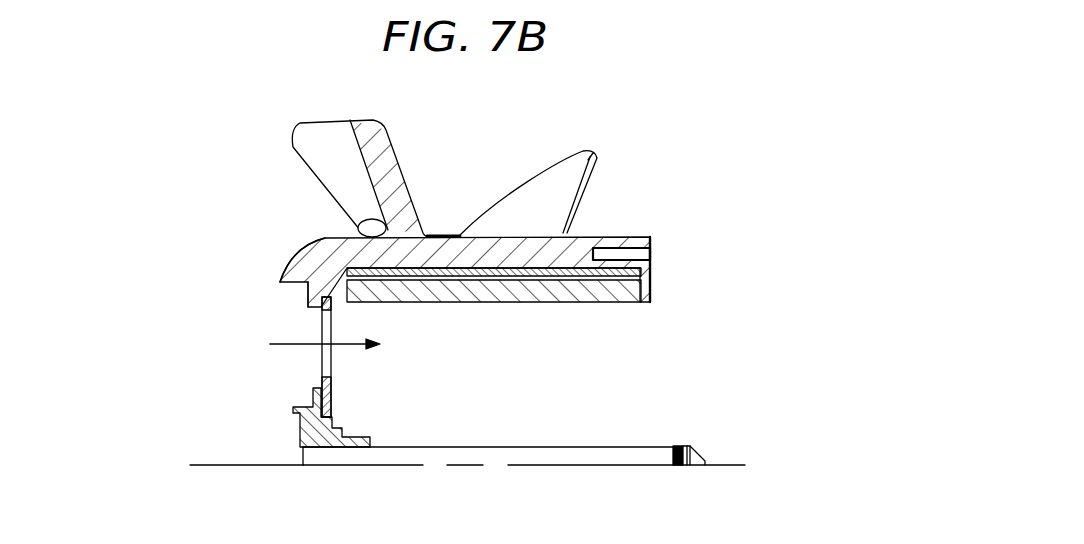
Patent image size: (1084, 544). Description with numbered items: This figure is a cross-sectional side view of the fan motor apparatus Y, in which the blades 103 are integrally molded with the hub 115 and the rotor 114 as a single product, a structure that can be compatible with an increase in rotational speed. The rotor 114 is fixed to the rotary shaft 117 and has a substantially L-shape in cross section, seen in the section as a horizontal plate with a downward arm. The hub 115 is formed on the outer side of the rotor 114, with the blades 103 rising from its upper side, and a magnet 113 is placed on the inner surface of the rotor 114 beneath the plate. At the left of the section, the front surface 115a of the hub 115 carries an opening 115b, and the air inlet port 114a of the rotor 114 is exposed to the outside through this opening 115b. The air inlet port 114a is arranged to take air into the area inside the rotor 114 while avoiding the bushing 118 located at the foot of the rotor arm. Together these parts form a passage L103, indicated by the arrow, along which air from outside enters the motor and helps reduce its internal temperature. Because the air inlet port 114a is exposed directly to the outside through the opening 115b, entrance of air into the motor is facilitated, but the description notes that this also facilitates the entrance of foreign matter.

The blades 103 is at (557, 164).
The hub 115 is at (635, 237).
The front surface of the hub 115a is at (278, 281).
The opening 115b is at (282, 322).
The passage L103 is at (287, 348).
The air inlet port 114a is at (333, 330).
The bushing 118 is at (342, 428).
The rotor 114 is at (597, 282).
The magnet 113 is at (625, 300).
The rotary shaft 117 is at (662, 446).
The fan motor apparatus Y is at (760, 200).